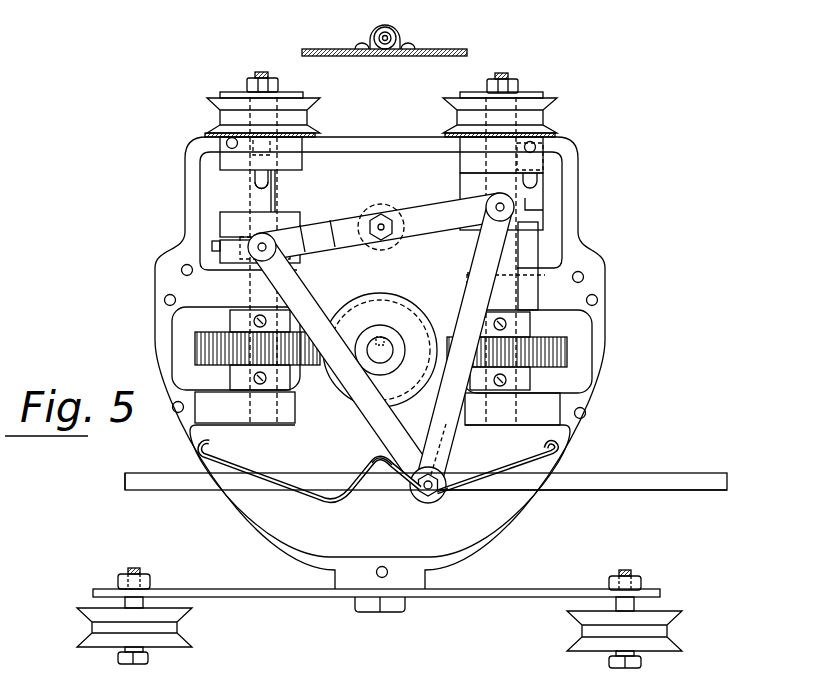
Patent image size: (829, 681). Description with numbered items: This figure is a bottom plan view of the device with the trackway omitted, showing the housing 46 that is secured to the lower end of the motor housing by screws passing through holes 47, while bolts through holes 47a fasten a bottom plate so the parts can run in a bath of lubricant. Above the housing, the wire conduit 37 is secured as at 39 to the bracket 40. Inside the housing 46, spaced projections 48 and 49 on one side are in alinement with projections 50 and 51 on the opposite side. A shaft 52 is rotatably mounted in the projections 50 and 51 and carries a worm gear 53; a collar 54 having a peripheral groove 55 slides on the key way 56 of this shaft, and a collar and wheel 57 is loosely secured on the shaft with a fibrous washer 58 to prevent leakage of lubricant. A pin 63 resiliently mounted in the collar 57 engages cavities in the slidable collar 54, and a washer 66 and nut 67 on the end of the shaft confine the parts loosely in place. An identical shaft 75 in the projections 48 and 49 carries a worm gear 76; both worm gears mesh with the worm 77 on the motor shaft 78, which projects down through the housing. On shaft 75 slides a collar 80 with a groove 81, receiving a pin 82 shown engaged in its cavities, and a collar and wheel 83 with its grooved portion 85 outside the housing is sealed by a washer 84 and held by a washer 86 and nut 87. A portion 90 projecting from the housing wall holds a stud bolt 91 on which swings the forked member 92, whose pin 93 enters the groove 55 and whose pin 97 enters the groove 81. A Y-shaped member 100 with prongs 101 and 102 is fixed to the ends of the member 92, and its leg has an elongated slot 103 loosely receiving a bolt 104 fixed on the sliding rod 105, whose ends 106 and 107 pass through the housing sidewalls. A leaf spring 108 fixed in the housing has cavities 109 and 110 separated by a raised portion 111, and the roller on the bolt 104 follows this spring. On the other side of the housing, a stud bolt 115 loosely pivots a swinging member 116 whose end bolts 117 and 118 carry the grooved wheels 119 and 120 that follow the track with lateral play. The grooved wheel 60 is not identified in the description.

The conduit 37 is at (394, 29).
The securing point 39 is at (377, 28).
The bracket 40 is at (458, 49).
The housing 46 is at (606, 345).
The holes 47 is at (186, 276).
The holes 47a is at (226, 144).
The projection 48 is at (528, 289).
The projection 49 is at (536, 400).
The projection 50 is at (223, 308).
The projection 51 is at (222, 395).
The shaft 52 is at (256, 186).
The worm gear 53 is at (205, 352).
The collar 54 is at (236, 215).
The peripheral groove 55 is at (232, 245).
The key way 56 is at (278, 200).
The collar and wheel 57 is at (303, 163).
The fibrous washer 58 is at (206, 134).
The left pulley 60 is at (296, 116).
The pin 63 is at (265, 190).
The washer 66 is at (297, 94).
The nut 67 is at (272, 82).
The shaft 75 is at (513, 270).
The worm gear 76 is at (553, 356).
The worm 77 is at (414, 308).
The motor shaft 78 is at (392, 350).
The collar 80 is at (460, 185).
The peripheral groove 81 is at (536, 210).
The pin 82 is at (545, 164).
The collar and wheel 83 is at (460, 162).
The washer 84 is at (556, 136).
The grooved portion 85 is at (545, 116).
The washer 86 is at (536, 94).
The nut 87 is at (520, 82).
The portion 90 is at (386, 208).
The stud bolt 91 is at (378, 243).
The swinging member 92 is at (430, 233).
The pin 93 is at (262, 262).
The pin 97 is at (500, 214).
The Y-shaped member 100 is at (438, 466).
The prong 101 is at (310, 302).
The prong 102 is at (471, 269).
The elongated slot 103 is at (446, 440).
The bolt 104 is at (424, 498).
The sliding rod 105 is at (505, 492).
The rod end 106 is at (728, 476).
The rod end 107 is at (130, 476).
The leaf spring 108 is at (544, 448).
The cavity 109 is at (432, 504).
The cavity 110 is at (318, 500).
The raised portion 111 is at (384, 456).
The stud bolt 115 is at (388, 614).
The swinging member 116 is at (521, 598).
The bolt 117 is at (630, 574).
The bolt 118 is at (140, 570).
The grooved wheel 119 is at (683, 619).
The grooved wheel 120 is at (80, 609).